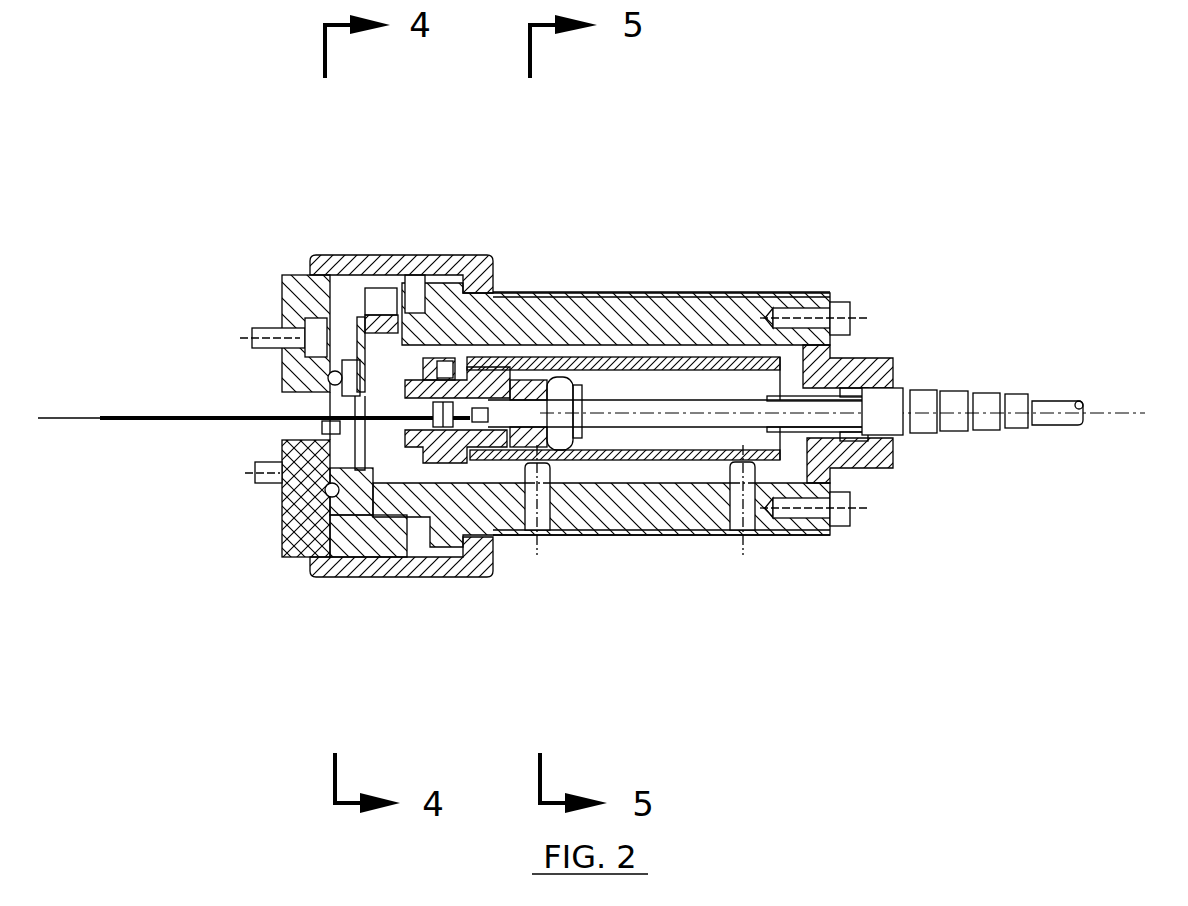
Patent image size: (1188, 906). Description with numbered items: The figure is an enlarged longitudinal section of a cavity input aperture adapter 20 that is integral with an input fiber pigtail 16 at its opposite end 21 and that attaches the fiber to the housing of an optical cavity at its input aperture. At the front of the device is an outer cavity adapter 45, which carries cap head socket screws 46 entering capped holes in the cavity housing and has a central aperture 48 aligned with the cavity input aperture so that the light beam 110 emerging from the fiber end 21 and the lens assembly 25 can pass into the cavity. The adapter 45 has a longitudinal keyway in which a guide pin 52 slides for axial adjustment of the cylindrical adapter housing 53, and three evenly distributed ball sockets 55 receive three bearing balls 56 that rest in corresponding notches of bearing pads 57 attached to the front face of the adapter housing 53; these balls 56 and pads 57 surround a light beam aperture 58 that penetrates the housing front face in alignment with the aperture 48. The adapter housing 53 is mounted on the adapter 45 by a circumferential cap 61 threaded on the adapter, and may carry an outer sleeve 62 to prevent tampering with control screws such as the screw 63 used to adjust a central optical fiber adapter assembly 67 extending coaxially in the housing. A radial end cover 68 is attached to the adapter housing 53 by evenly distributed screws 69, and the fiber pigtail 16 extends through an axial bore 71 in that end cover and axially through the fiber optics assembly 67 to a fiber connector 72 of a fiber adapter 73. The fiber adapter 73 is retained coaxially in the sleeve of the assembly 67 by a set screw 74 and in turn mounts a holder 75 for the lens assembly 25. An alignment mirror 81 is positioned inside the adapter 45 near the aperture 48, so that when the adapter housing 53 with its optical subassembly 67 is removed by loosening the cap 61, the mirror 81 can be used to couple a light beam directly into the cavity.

The input fiber pigtail 16 is at (1060, 415).
The cavity input aperture adapter 20 is at (778, 538).
The opposite end of input fiber pigtail 21 is at (478, 445).
The lens assembly 25 is at (403, 397).
The outer cavity adapter 45 is at (292, 282).
The cap head socket screws 46 is at (255, 468).
The central aperture 48 is at (300, 428).
The guide pin 52 is at (350, 285).
The adapter housing 53 is at (783, 288).
The ball sockets 55 is at (290, 535).
The bearing balls 56 is at (300, 372).
The bearing pads 57 is at (283, 338).
The light beam aperture 58 is at (288, 497).
The circumferential cap 61 is at (367, 300).
The outer sleeve 62 is at (722, 290).
The control screw 63 is at (713, 537).
The optical fiber adapter assembly 67 is at (822, 470).
The end cover 68 is at (897, 452).
The screws 69 is at (852, 305).
The axial bore 71 is at (893, 362).
The fiber connector 72 is at (583, 365).
The fiber adapter 73 is at (545, 382).
The set screw 74 is at (455, 362).
The holder 75 is at (415, 443).
The alignment mirror 81 is at (253, 473).
The light beam 110 is at (175, 412).